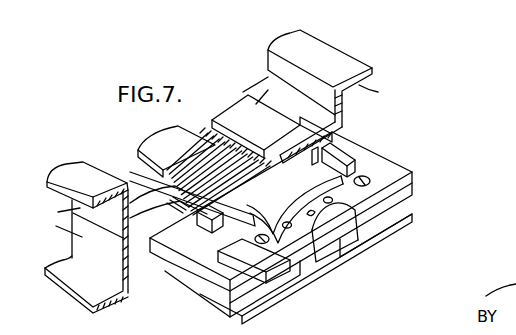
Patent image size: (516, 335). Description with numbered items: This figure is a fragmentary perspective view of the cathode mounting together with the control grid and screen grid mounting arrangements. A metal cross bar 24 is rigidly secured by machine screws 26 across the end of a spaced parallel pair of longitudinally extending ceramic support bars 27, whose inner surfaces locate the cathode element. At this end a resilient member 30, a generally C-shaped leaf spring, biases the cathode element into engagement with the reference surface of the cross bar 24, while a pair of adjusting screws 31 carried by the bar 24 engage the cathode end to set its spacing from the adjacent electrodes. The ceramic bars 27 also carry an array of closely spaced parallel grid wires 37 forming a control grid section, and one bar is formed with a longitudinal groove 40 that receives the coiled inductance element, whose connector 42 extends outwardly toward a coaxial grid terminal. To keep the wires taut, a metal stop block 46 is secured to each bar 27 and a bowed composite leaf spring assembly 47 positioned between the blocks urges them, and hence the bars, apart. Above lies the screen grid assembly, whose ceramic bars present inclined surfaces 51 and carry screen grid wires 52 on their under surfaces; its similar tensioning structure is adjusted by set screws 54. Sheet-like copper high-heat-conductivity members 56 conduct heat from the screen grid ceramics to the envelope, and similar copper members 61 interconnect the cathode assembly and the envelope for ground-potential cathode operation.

The metal cross bar 24 is at (411, 172).
The machine screw 26 is at (367, 177).
The ceramic support bar 27 is at (408, 200).
The resilient member 30 is at (349, 257).
The adjusting screw 31 is at (327, 296).
The grid wires 37 is at (170, 146).
The groove 40 is at (167, 204).
The connector 42 is at (205, 262).
The stop block 46 is at (203, 228).
The composite leaf spring assembly 47 is at (282, 155).
The inclined surface 51 is at (232, 105).
The screen grid wires 52 is at (213, 125).
The set screw 54 is at (334, 158).
The high-heat-conductivity member 56 is at (123, 303).
The high-heat-conductivity member 61 is at (219, 160).